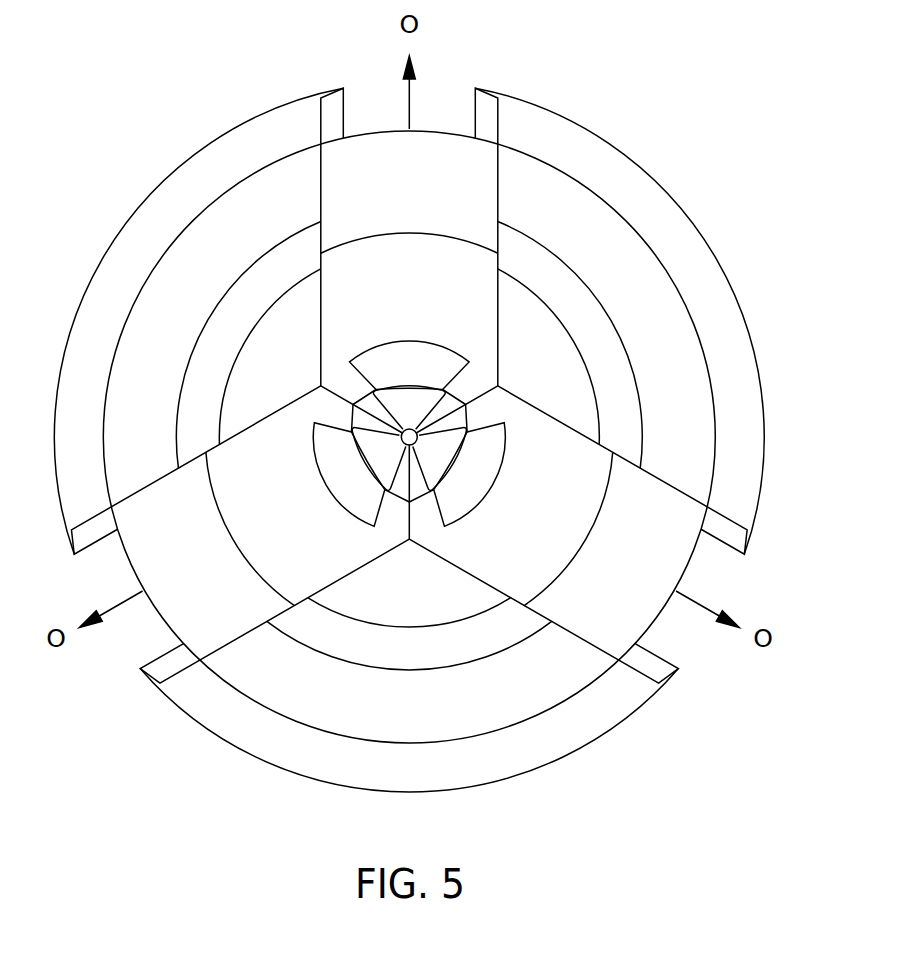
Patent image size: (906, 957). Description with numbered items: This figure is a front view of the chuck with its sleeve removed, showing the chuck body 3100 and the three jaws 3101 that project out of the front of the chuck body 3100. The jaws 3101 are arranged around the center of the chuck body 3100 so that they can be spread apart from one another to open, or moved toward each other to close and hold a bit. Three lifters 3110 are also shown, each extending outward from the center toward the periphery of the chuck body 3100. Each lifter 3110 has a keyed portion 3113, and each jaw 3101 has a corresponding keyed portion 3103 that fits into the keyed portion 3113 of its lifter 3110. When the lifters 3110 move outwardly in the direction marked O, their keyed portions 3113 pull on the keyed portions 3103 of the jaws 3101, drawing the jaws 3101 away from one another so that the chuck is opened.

The chuck body 3100 is at (152, 230).
The lifter 3110 is at (427, 152).
The keyed portion 3103 is at (343, 381).
The jaw 3101 is at (400, 407).
The keyed portion 3113 is at (433, 365).